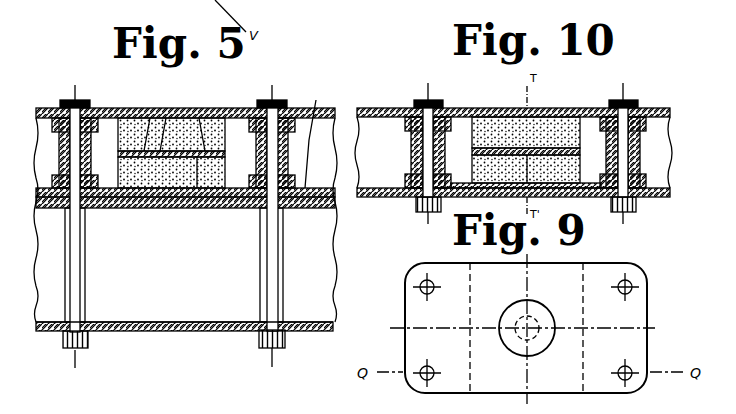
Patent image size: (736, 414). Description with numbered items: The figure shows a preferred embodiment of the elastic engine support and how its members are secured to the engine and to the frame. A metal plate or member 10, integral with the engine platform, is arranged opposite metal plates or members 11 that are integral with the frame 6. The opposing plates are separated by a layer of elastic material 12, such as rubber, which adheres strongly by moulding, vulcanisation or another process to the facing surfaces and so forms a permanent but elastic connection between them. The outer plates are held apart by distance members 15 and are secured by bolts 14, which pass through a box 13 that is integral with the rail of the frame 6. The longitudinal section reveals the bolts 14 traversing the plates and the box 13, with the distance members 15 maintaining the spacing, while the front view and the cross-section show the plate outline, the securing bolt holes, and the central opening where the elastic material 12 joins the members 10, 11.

In FIG. 5, the frame 6 is at (313, 320).
In FIG. 5, the metal plate or member 10 is at (170, 148).
In FIG. 9, the metal plate or member 10 is at (568, 282).
In FIG. 5, the metal plates or members 11 is at (194, 186).
In FIG. 9, the metal plates or members 11 is at (636, 292).
In FIG. 5, the layer of elastic material 12 is at (145, 160).
In FIG. 5, the box 13 is at (311, 136).
In FIG. 5, the bolts 14 is at (72, 96).
In FIG. 5, the distance members 15 is at (85, 160).